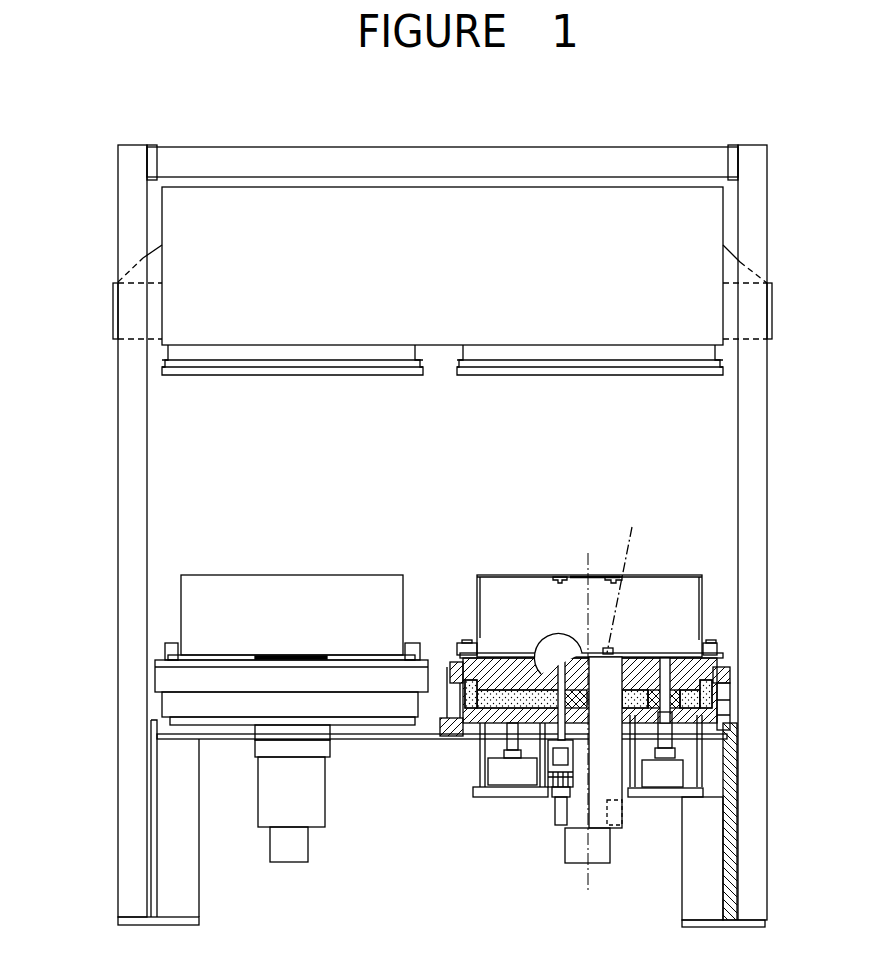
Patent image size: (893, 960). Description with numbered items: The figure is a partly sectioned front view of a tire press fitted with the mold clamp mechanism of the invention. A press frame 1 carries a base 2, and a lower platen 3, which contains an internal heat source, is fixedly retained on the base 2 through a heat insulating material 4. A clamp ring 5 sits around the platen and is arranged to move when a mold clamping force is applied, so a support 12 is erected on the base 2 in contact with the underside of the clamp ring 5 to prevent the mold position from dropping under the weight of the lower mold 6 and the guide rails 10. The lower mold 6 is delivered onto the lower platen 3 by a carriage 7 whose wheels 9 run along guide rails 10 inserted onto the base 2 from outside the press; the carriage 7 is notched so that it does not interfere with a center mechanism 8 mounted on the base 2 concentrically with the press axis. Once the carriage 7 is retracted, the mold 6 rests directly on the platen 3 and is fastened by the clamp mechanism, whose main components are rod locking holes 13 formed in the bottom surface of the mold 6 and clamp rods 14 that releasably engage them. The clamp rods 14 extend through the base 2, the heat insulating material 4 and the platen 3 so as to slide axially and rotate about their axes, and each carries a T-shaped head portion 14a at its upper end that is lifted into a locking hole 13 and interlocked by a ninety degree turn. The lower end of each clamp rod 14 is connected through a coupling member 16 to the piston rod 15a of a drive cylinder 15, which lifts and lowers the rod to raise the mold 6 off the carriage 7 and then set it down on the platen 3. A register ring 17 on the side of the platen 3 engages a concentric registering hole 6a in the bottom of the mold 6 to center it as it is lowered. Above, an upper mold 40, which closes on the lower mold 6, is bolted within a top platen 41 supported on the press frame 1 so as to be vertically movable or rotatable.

The press frame 1 is at (748, 542).
The base 2 is at (712, 738).
The lower platen 3 is at (502, 667).
The heat insulating material 4 is at (467, 740).
The clamp ring 5 is at (732, 685).
The lower mold 6 is at (627, 627).
The registering hole 6a is at (626, 579).
The carriage 7 is at (708, 643).
The center mechanism 8 is at (610, 780).
The wheels 9 is at (463, 645).
The guide rails 10 is at (452, 657).
The support 12 is at (735, 712).
The rod locking holes 13 is at (613, 576).
The clamp rods 14 is at (522, 662).
The T-shaped head portion 14a is at (562, 636).
The drive cylinder 15 is at (558, 813).
The piston rod 15a is at (558, 790).
The coupling member 16 is at (552, 757).
The register ring 17 is at (627, 652).
The upper mold 40 is at (598, 575).
The top platen 41 is at (541, 207).